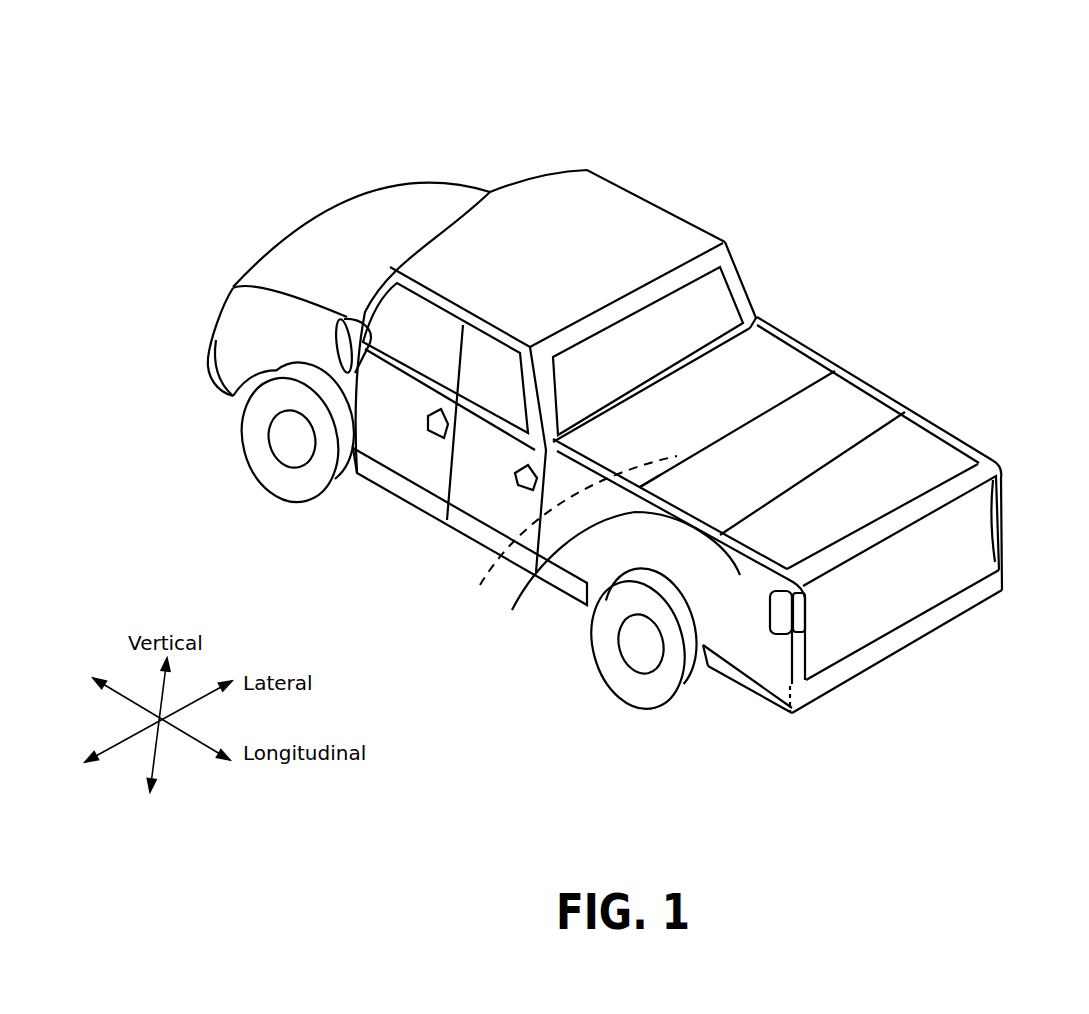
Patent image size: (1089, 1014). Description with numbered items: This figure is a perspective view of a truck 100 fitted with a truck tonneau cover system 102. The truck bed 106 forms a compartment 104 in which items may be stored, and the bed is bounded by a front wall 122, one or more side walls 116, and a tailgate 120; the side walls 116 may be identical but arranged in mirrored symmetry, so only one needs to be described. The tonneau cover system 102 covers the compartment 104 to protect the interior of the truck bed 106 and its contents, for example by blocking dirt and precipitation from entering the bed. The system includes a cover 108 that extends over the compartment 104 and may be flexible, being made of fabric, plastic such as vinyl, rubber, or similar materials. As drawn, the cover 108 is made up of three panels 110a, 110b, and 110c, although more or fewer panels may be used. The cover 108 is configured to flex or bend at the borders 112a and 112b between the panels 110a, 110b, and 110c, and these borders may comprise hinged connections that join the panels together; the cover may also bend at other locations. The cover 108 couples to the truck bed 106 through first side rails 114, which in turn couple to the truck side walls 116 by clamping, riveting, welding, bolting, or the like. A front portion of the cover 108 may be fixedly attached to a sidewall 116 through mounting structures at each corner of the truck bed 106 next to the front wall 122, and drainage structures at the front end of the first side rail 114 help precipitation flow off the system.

The truck 100 is at (337, 178).
The tonneau cover system 102 is at (1021, 604).
The compartment 104 is at (553, 537).
The truck bed 106 is at (820, 248).
The cover 108 is at (833, 387).
The panel 110a is at (748, 360).
The panel 110b is at (617, 580).
The panel 110c is at (950, 462).
The border 112a is at (637, 490).
The border 112b is at (897, 417).
The first side rail 114 is at (737, 508).
The side wall 116 is at (743, 647).
The tailgate 120 is at (900, 593).
The front wall 122 is at (715, 345).